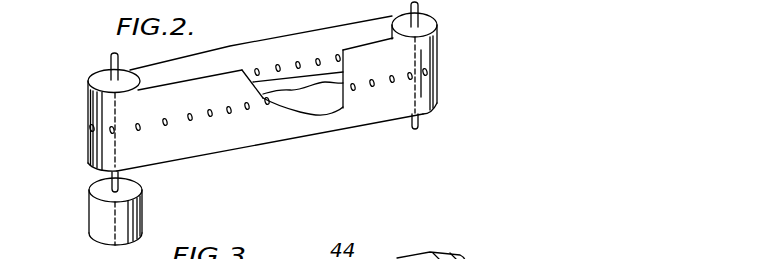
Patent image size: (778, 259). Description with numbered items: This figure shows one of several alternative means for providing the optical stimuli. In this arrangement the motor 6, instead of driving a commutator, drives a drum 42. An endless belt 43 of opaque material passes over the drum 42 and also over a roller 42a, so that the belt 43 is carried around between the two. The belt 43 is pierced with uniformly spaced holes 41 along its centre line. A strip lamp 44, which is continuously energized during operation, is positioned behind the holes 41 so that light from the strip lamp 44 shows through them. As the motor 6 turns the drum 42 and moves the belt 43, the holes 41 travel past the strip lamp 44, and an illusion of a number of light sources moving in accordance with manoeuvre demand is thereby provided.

The motor 6 is at (107, 227).
The holes 41 is at (247, 110).
The drum 42 is at (100, 79).
The roller 42a is at (428, 23).
The endless belt 43 is at (360, 103).
The strip lamp 44 is at (275, 83).